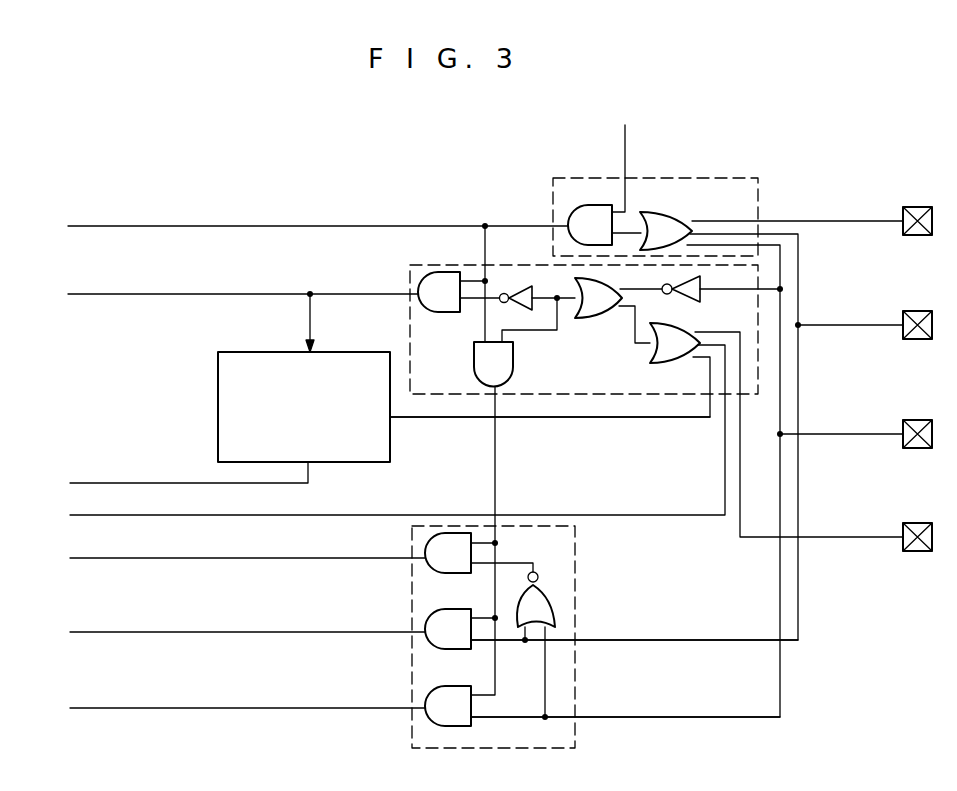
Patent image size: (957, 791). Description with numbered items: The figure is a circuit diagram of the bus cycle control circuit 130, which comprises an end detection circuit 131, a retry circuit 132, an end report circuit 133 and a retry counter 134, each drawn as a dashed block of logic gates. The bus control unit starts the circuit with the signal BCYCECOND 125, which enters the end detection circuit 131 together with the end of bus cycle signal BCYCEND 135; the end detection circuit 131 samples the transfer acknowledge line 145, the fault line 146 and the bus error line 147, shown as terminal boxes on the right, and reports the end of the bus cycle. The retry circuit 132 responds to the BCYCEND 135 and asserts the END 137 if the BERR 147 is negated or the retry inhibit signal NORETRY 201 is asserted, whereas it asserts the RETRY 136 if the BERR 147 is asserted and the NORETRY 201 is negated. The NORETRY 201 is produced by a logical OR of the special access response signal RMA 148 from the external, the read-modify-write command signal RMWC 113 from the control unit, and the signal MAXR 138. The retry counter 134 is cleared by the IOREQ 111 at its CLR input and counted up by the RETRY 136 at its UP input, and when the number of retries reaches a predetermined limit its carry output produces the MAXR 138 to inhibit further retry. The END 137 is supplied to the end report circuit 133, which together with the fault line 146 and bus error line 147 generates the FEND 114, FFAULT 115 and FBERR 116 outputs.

The I/O request signal 111 is at (140, 483).
The read-modify-write command signal 113 is at (220, 515).
The FEND signal 114 is at (165, 558).
The FFAULT signal 115 is at (177, 632).
The FBERR signal 116 is at (172, 708).
The BCYCECOND signal 125 is at (625, 140).
The bus cycle control circuit 130 is at (407, 203).
The end detection circuit 131 is at (560, 178).
The retry circuit 132 is at (555, 318).
The end report circuit 133 is at (575, 578).
The retry counter 134 is at (353, 352).
The end of bus cycle signal 135 is at (182, 226).
The retry signal 136 is at (181, 294).
The end signal 137 is at (497, 458).
The MAXR signal 138 is at (438, 418).
The transfer acknowledge line 145 is at (884, 221).
The fault line 146 is at (884, 325).
The bus error line 147 is at (884, 434).
The special access response signal 148 is at (884, 537).
The retry inhibit signal 201 is at (635, 343).